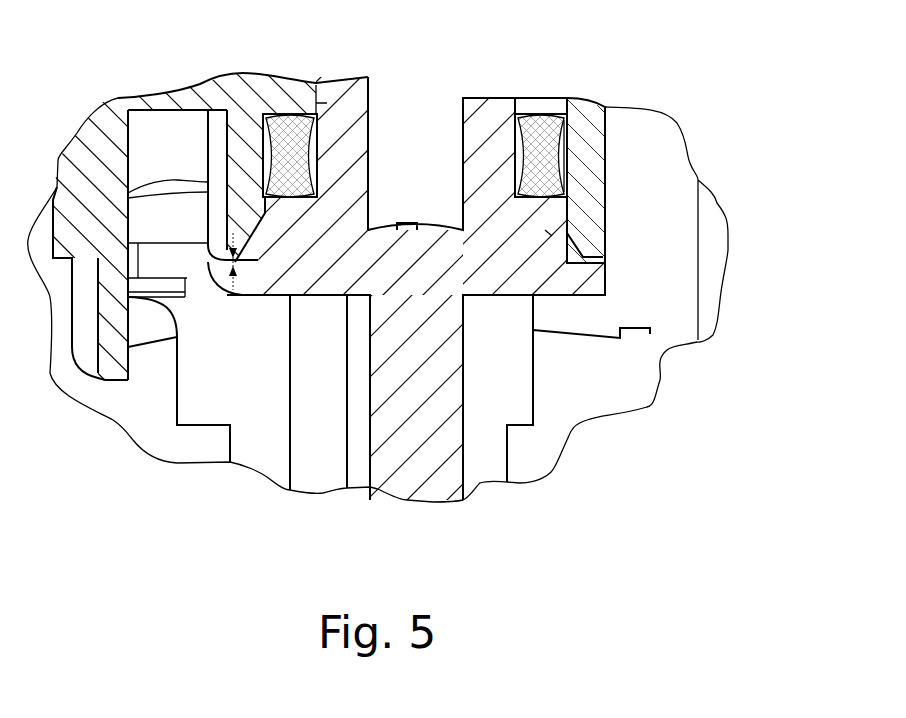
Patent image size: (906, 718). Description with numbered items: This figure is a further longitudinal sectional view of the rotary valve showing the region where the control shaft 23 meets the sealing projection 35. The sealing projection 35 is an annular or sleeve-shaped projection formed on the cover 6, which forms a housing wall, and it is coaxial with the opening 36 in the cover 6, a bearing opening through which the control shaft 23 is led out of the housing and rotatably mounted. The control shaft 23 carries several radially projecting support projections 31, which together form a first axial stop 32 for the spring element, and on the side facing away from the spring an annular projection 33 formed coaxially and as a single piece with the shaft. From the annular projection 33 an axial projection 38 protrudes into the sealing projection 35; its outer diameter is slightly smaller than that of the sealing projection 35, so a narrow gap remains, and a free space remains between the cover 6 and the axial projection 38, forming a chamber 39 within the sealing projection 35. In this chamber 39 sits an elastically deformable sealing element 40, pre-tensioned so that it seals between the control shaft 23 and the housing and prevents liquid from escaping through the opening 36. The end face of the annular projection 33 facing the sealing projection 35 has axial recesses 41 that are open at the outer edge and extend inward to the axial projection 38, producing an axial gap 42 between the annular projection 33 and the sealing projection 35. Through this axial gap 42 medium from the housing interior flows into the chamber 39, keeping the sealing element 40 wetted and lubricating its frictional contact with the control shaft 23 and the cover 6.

The cover 6 is at (167, 105).
The control shaft 23 is at (445, 362).
The support projections 31 is at (207, 412).
The first axial stop 32 is at (205, 428).
The annular projection 33 is at (583, 262).
The sealing projection 35 is at (218, 132).
The opening 36 is at (317, 100).
The axial projection 38 is at (547, 232).
The chamber 39 is at (570, 124).
The sealing element 40 is at (285, 150).
The axial recesses 41 is at (650, 333).
The axial gap 42 is at (236, 283).